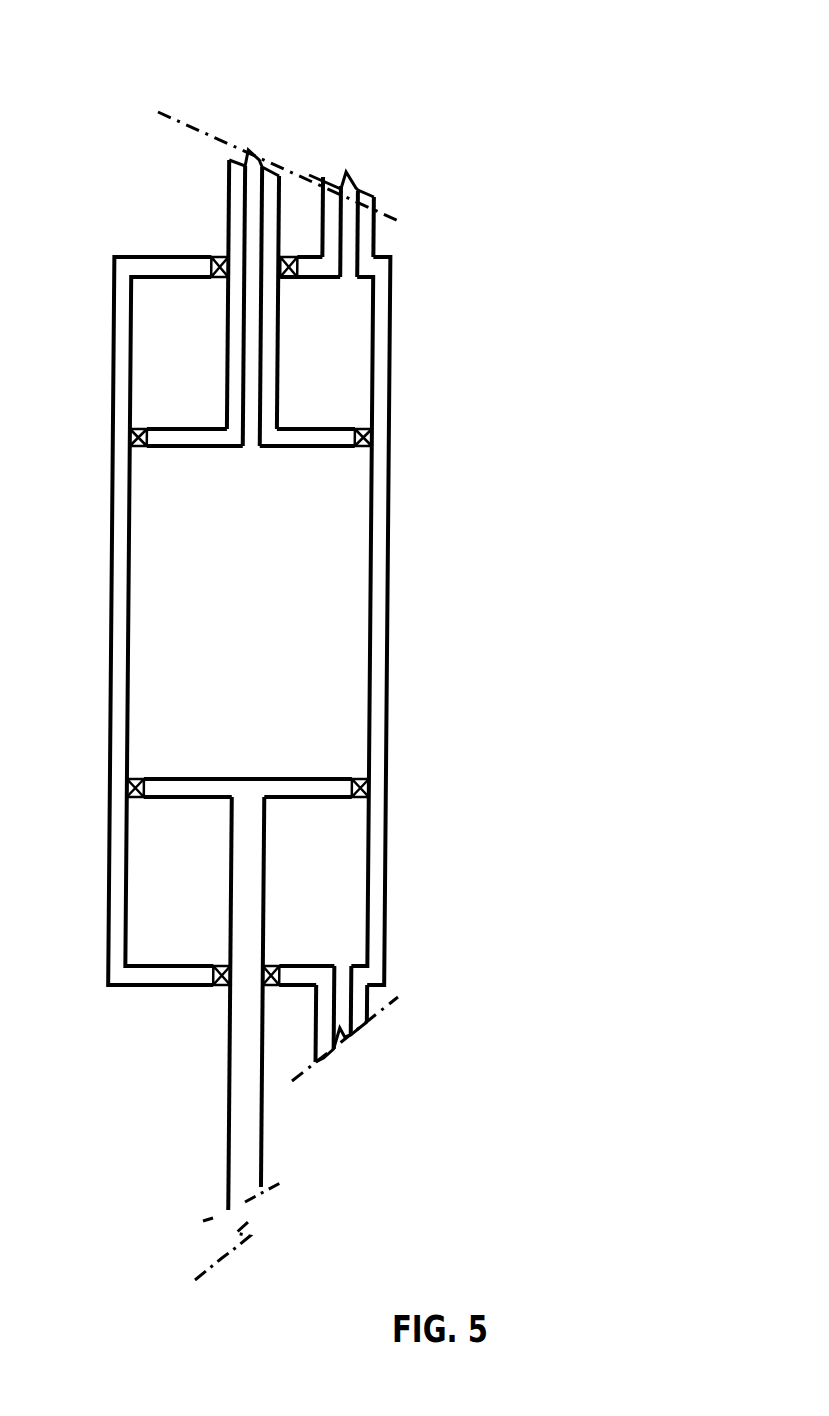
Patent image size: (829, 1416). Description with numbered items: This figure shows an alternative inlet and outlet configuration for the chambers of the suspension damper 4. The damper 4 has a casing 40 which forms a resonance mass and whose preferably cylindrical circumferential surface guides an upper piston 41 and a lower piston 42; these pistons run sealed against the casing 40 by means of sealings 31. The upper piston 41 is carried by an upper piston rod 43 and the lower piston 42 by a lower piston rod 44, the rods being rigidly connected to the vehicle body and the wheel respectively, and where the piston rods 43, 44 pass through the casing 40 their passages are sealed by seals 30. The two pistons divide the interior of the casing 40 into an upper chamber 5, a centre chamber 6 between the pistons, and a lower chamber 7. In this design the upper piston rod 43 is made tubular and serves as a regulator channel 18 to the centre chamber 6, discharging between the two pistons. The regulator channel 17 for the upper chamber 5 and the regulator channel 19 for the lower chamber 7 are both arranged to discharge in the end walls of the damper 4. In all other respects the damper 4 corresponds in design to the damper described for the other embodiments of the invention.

The damper 4 is at (471, 482).
The upper chamber 5 is at (330, 375).
The centre chamber 6 is at (308, 718).
The lower chamber 7 is at (325, 915).
The regulator channel 17 is at (348, 156).
The regulator channel 18 is at (254, 118).
The regulator channel 19 is at (340, 1072).
The seals 30 is at (193, 1025).
The sealings 31 is at (133, 433).
The casing 40 is at (380, 615).
The upper piston 41 is at (190, 437).
The lower piston 42 is at (210, 787).
The piston rod 43 is at (237, 195).
The piston rod 44 is at (245, 1070).